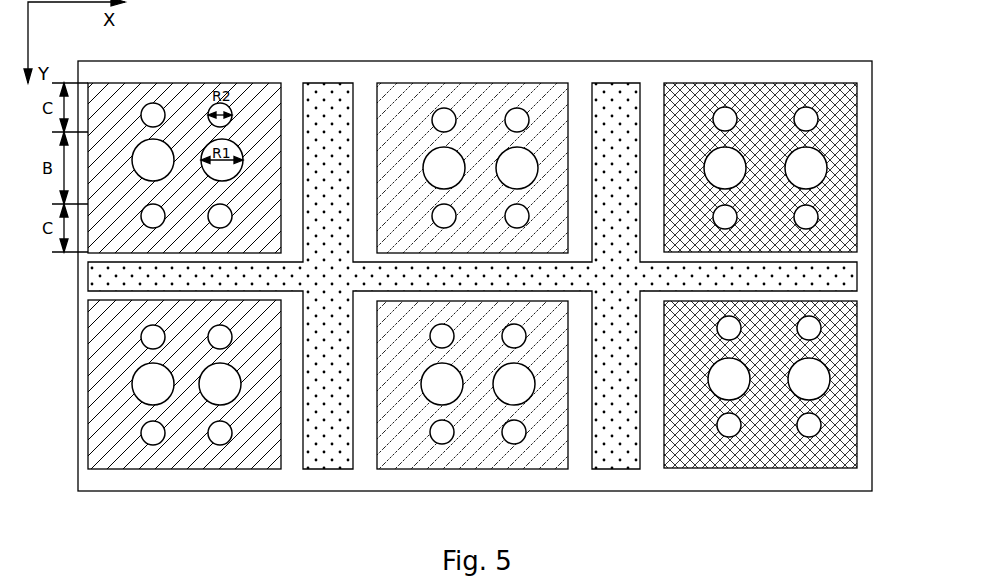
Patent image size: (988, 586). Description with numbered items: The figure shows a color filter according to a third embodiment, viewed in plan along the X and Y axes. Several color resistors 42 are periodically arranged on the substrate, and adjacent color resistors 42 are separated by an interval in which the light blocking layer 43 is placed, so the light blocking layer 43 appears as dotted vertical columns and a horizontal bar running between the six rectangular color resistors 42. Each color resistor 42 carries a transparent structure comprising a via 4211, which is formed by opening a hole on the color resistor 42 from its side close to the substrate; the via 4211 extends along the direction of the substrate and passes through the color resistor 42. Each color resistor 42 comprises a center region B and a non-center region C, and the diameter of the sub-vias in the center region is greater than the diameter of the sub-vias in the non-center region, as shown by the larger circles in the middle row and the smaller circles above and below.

The via 4211 is at (809, 121).
The color resistor 42 is at (796, 164).
The light blocking layer 43 is at (856, 278).